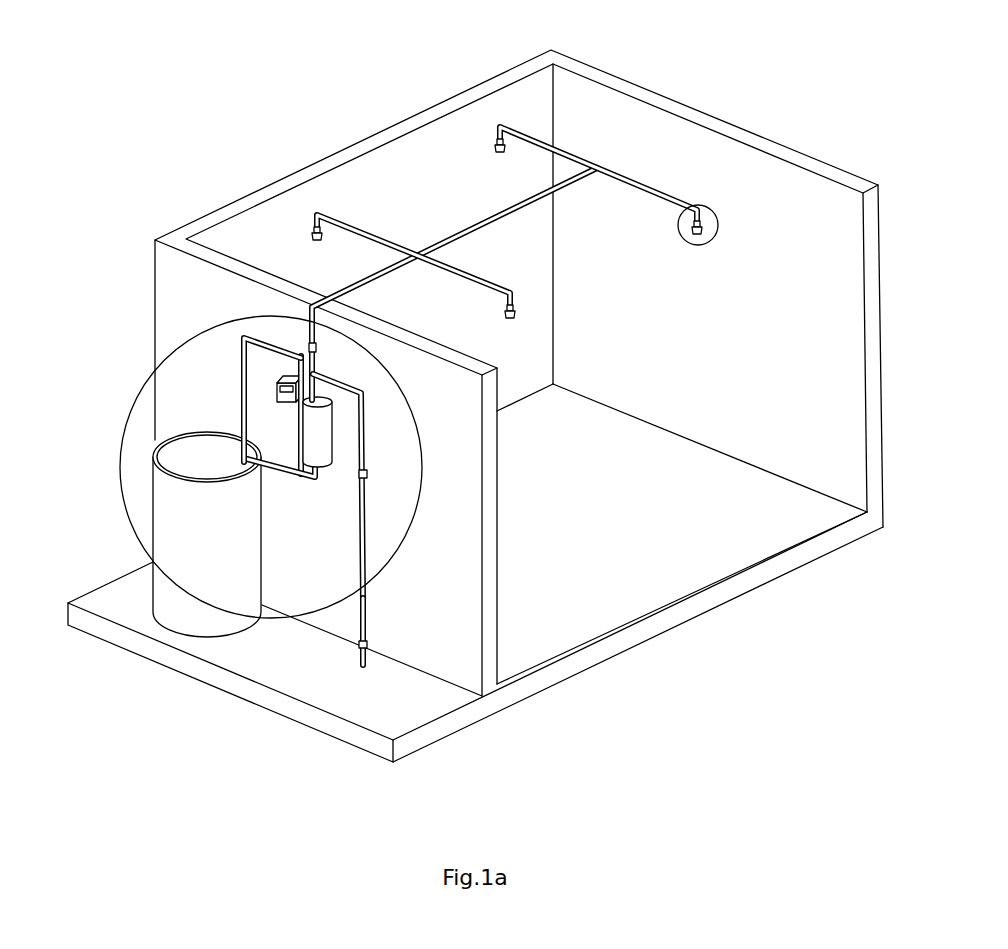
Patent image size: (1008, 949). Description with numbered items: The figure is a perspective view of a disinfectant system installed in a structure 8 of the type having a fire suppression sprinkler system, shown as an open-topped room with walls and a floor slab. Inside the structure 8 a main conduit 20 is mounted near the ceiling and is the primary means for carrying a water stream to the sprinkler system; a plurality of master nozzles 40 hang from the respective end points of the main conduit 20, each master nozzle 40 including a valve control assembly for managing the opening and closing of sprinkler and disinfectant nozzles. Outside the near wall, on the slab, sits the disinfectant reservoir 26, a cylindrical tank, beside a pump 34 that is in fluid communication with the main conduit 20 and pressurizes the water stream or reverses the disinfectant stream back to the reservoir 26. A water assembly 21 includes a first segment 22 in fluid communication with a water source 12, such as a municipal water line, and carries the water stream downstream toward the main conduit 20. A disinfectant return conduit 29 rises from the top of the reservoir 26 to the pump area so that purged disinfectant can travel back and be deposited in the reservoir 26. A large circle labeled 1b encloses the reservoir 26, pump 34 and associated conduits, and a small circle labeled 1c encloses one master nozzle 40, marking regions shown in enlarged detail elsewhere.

The structure 8 is at (624, 125).
The water source 12 is at (365, 623).
The main conduit 20 is at (327, 264).
The water assembly 21 is at (388, 406).
The first segment 22 is at (367, 452).
The disinfectant reservoir 26 is at (171, 512).
The disinfectant return conduit 29 is at (240, 399).
The pump 34 is at (320, 442).
The master nozzle 40 is at (710, 267).
The detail region 1b is at (147, 375).
The detail region 1c is at (713, 210).